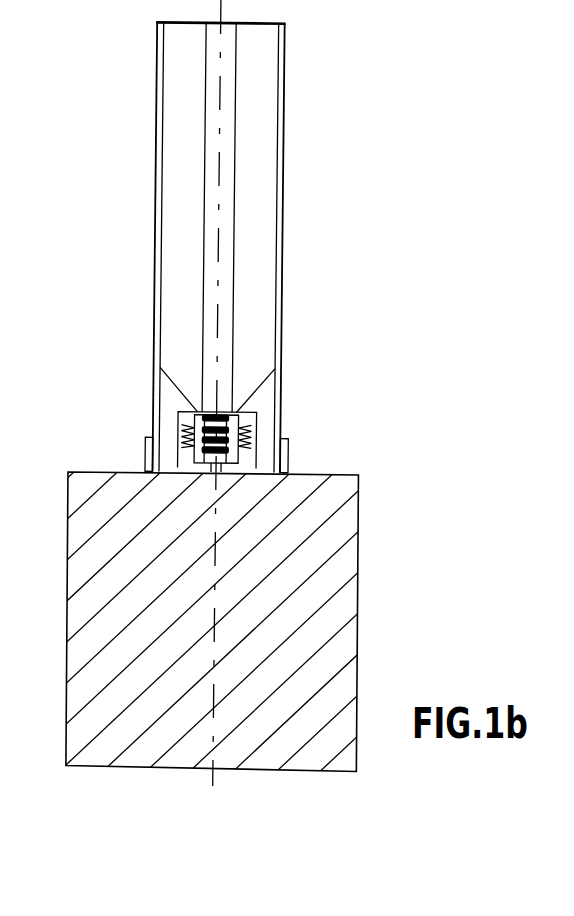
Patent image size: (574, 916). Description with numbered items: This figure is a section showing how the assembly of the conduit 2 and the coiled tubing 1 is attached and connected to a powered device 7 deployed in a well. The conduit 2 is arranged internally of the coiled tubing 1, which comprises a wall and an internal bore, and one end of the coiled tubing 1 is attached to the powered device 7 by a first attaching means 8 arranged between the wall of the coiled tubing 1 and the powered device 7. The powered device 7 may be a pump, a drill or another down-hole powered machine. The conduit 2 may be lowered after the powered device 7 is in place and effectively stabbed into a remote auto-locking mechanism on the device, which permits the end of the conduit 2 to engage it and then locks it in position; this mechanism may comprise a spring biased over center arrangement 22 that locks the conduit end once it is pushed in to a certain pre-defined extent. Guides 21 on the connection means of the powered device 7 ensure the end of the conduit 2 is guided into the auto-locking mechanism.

The coiled tubing 1 is at (284, 110).
The conduit 2 is at (235, 218).
The powered device 7 is at (327, 633).
The first attaching means 8 is at (287, 457).
The guides 21 is at (177, 392).
The spring biased over center arrangement 22 is at (183, 450).